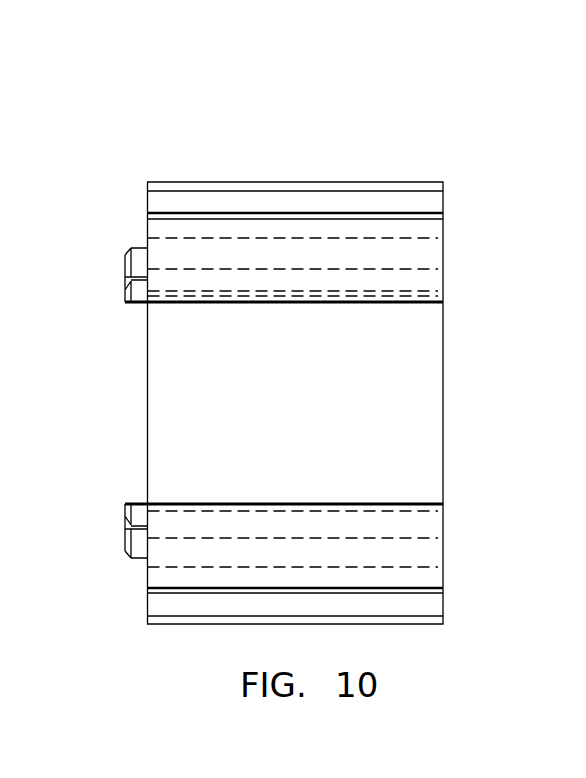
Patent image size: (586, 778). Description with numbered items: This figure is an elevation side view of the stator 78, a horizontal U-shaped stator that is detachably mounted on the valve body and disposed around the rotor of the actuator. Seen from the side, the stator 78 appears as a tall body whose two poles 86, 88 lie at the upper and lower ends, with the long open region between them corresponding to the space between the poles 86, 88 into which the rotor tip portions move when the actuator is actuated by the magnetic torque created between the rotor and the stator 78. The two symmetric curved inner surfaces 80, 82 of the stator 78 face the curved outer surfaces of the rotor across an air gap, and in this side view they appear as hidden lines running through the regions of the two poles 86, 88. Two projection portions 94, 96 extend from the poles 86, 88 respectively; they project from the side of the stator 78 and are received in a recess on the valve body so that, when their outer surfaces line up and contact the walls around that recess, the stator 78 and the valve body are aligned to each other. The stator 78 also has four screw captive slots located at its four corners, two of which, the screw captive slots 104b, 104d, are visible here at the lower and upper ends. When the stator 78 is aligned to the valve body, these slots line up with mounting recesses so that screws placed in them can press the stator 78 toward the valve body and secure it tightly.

The stator 78 is at (386, 160).
The curved inner surface 80 is at (422, 535).
The curved inner surface 82 is at (424, 270).
The pole 86 is at (147, 605).
The pole 88 is at (147, 203).
The projection portion 94 is at (138, 547).
The projection portion 96 is at (139, 258).
The screw captive slot 104b is at (190, 603).
The screw captive slot 104d is at (413, 203).